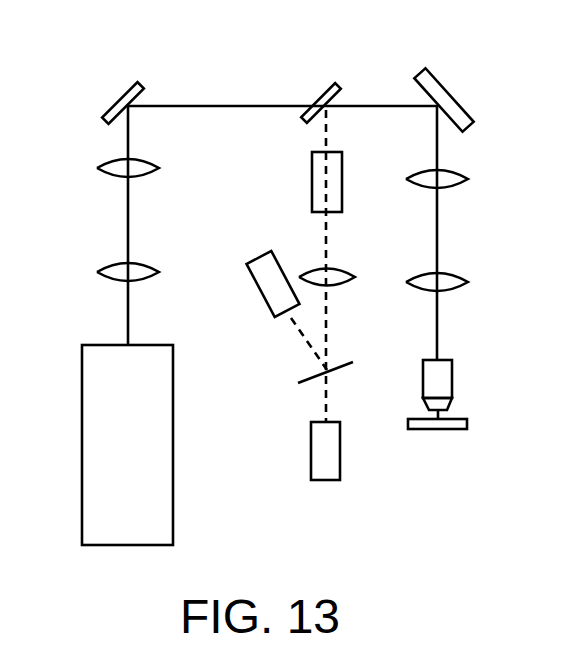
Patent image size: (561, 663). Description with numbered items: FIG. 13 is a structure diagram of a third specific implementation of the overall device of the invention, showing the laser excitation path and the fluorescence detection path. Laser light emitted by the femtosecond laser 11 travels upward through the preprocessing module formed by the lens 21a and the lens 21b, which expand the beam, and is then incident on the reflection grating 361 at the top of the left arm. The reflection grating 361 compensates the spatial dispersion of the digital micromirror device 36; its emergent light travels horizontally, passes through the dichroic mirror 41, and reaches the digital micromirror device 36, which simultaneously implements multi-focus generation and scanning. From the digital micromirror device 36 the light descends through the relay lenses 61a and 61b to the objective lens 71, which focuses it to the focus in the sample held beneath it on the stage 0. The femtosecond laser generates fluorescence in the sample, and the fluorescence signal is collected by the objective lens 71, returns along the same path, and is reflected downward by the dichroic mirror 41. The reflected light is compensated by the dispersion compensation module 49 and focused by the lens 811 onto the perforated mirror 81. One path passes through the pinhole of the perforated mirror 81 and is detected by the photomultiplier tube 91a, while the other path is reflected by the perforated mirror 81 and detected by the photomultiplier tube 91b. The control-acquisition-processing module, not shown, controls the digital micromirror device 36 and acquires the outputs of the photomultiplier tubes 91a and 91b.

The reflection grating 361 is at (142, 85).
The dichroic mirror 41 is at (342, 85).
The digital micromirror device 36 is at (449, 96).
The lens 21b is at (97, 167).
The lens 21a is at (97, 271).
The femtosecond laser 11 is at (82, 441).
The dispersion compensation module 49 is at (312, 182).
The lens 811 is at (355, 276).
The photomultiplier tube 91b is at (252, 276).
The perforated mirror 81 is at (298, 383).
The photomultiplier tube 91a is at (311, 457).
The relay lens 61a is at (468, 180).
The relay lens 61b is at (468, 283).
The objective lens 71 is at (452, 385).
The sample 0 is at (467, 428).